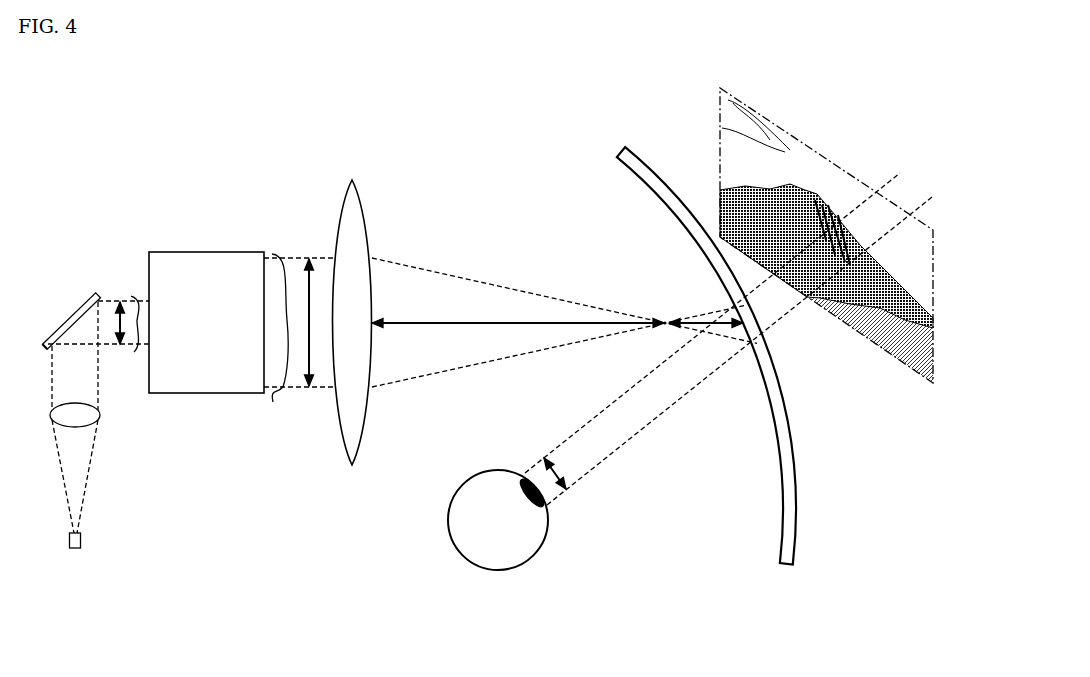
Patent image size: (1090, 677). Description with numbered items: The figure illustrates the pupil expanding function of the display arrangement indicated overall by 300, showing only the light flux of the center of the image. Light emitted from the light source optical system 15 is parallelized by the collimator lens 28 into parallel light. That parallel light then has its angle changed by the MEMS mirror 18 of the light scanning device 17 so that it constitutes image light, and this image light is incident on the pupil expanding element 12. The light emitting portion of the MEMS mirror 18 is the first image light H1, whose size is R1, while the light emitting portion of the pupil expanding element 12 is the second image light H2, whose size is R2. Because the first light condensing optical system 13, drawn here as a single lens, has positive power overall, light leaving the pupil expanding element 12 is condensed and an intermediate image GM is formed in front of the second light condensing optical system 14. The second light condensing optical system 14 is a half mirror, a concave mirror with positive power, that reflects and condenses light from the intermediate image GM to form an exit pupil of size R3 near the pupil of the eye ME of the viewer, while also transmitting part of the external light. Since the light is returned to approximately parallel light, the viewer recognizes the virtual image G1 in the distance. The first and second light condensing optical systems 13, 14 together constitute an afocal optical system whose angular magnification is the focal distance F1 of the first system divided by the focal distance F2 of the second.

The head-mounted display device 300 is at (690, 95).
The pupil expanding element 12 is at (222, 258).
The first light condensing optical system 13 is at (352, 196).
The second light condensing optical system 14 is at (650, 178).
The light source optical system 15 is at (90, 542).
The light scanning device 17 is at (70, 296).
The MEMS mirror 18 is at (47, 338).
The collimator lens 28 is at (90, 417).
The size of first image light R1 is at (110, 318).
The size of second image light R2 is at (305, 313).
The size of exit pupil R3 is at (565, 473).
The first image light H1 is at (134, 352).
The second image light H2 is at (273, 402).
The focal distance of first light condensing optical system F1 is at (430, 321).
The focal distance of second light condensing optical system F2 is at (703, 320).
The intermediate image GM is at (660, 316).
The virtual image G1 is at (834, 158).
The eye of viewer ME is at (514, 550).